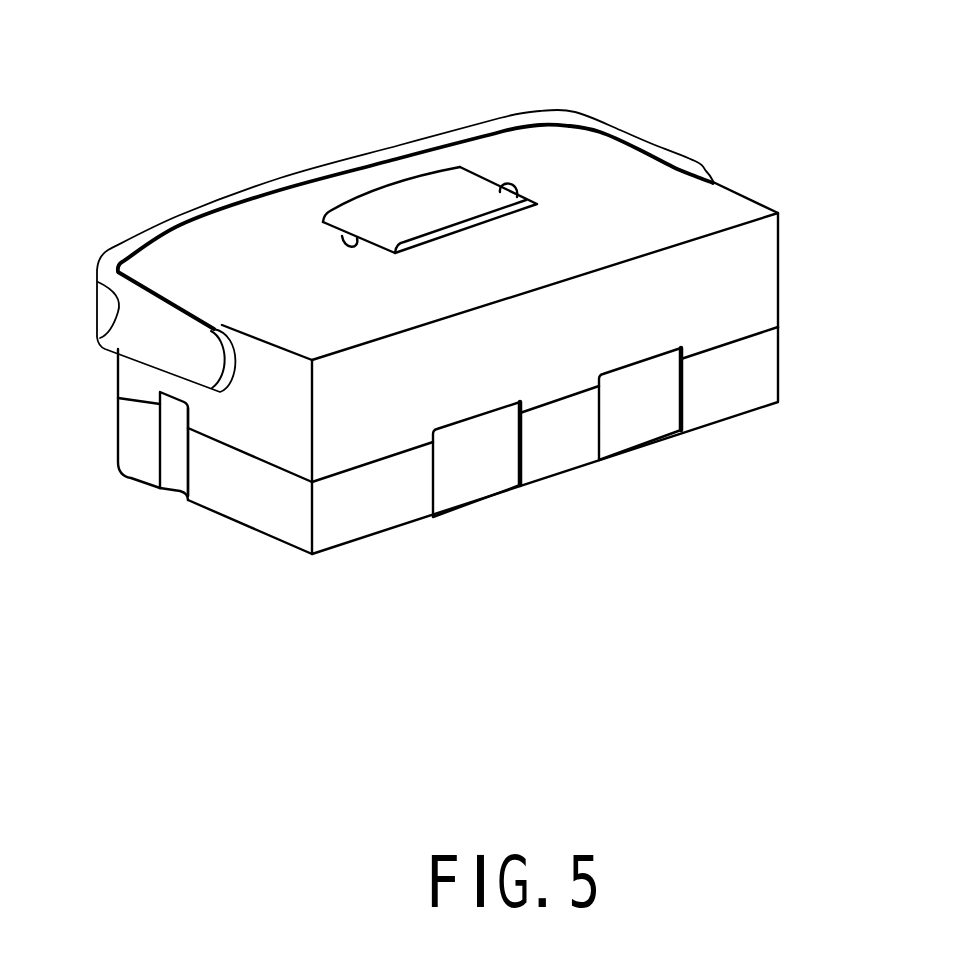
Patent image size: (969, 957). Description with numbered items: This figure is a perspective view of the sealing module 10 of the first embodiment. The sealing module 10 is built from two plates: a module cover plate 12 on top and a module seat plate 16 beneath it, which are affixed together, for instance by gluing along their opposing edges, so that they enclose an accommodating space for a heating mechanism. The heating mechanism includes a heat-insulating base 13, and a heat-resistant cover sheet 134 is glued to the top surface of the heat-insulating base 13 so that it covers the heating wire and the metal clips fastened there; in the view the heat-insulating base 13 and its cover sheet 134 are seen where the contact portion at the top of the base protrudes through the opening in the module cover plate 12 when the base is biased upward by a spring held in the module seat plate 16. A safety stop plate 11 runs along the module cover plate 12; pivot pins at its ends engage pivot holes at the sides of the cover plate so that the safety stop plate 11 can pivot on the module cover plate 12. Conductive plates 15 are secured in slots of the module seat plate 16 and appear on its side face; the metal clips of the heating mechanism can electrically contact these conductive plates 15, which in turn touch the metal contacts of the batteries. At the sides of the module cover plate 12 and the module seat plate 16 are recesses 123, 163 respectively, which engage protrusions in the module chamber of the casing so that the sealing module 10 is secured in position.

The sealing module 10 is at (449, 305).
The safety stop plate 11 is at (121, 248).
The module cover plate 12 is at (768, 272).
The heat-insulating base 13 is at (458, 228).
The heat-resistant cover sheet 134 is at (390, 197).
The conductive plates 15 is at (479, 468).
The module seat plate 16 is at (762, 363).
The recess 123 is at (172, 402).
The recess 163 is at (173, 456).